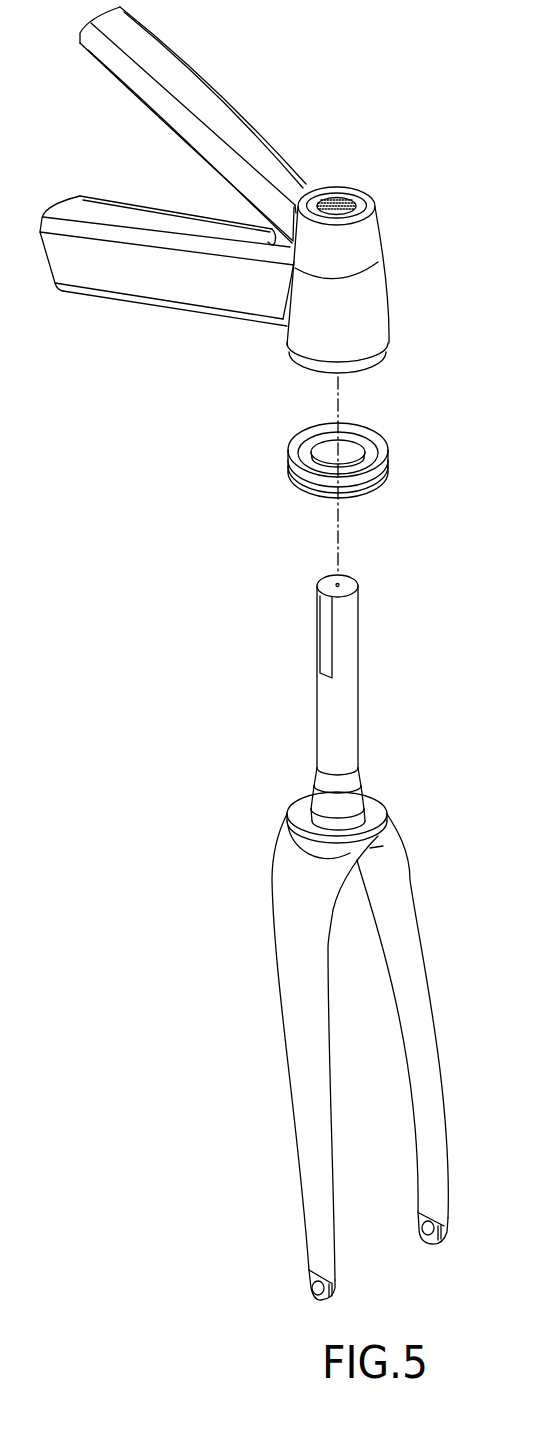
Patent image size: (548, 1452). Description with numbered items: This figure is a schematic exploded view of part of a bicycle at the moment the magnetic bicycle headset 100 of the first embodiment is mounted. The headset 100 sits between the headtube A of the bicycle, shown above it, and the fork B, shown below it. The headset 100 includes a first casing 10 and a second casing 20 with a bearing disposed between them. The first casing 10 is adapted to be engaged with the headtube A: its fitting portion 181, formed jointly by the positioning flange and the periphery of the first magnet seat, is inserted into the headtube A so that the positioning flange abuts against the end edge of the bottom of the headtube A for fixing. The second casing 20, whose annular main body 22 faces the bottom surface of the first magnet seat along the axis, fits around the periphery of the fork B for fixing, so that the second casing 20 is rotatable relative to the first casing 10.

The headtube A is at (370, 317).
The fork B is at (350, 740).
The magnetic bicycle headset 100 is at (296, 464).
The first casing 10 is at (341, 464).
The fitting portion 181 is at (386, 444).
The annular main body 22 is at (352, 452).
The second casing 20 is at (324, 463).